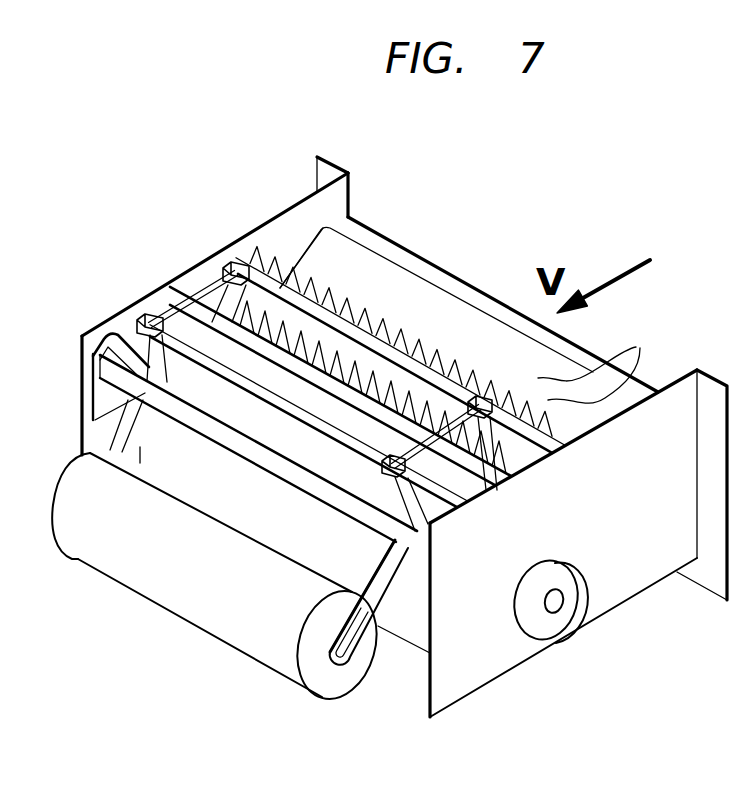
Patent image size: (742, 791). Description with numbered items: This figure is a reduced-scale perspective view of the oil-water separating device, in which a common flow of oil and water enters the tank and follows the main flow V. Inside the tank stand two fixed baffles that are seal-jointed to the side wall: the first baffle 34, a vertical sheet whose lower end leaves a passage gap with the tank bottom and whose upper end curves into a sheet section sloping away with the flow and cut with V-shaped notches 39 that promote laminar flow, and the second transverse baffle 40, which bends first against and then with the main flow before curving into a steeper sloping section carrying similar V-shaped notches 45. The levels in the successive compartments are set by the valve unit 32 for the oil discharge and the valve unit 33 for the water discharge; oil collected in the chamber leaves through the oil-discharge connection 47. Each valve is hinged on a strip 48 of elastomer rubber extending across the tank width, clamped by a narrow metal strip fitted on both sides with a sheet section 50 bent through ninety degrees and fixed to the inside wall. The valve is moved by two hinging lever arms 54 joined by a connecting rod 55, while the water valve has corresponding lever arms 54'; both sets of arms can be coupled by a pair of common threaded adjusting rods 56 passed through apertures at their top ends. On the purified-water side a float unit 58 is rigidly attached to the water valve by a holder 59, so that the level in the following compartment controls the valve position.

The valve unit 32 is at (500, 482).
The valve unit 33 is at (258, 455).
The first baffle 34 is at (352, 258).
The V-shaped notches 39 is at (602, 364).
The second transverse baffle 40 is at (558, 449).
The V-shaped notches 45 is at (373, 341).
The oil-discharge connection 47 is at (553, 602).
The strip of elastomer rubber material 48 is at (117, 328).
The sheet section 50 is at (80, 360).
The hinging lever arms 54 is at (193, 282).
The hinging lever arms 54' is at (439, 487).
The connecting rod 55 is at (273, 303).
The adjusting rods 56 is at (176, 300).
The float unit 58 is at (247, 643).
The holder 59 is at (138, 427).